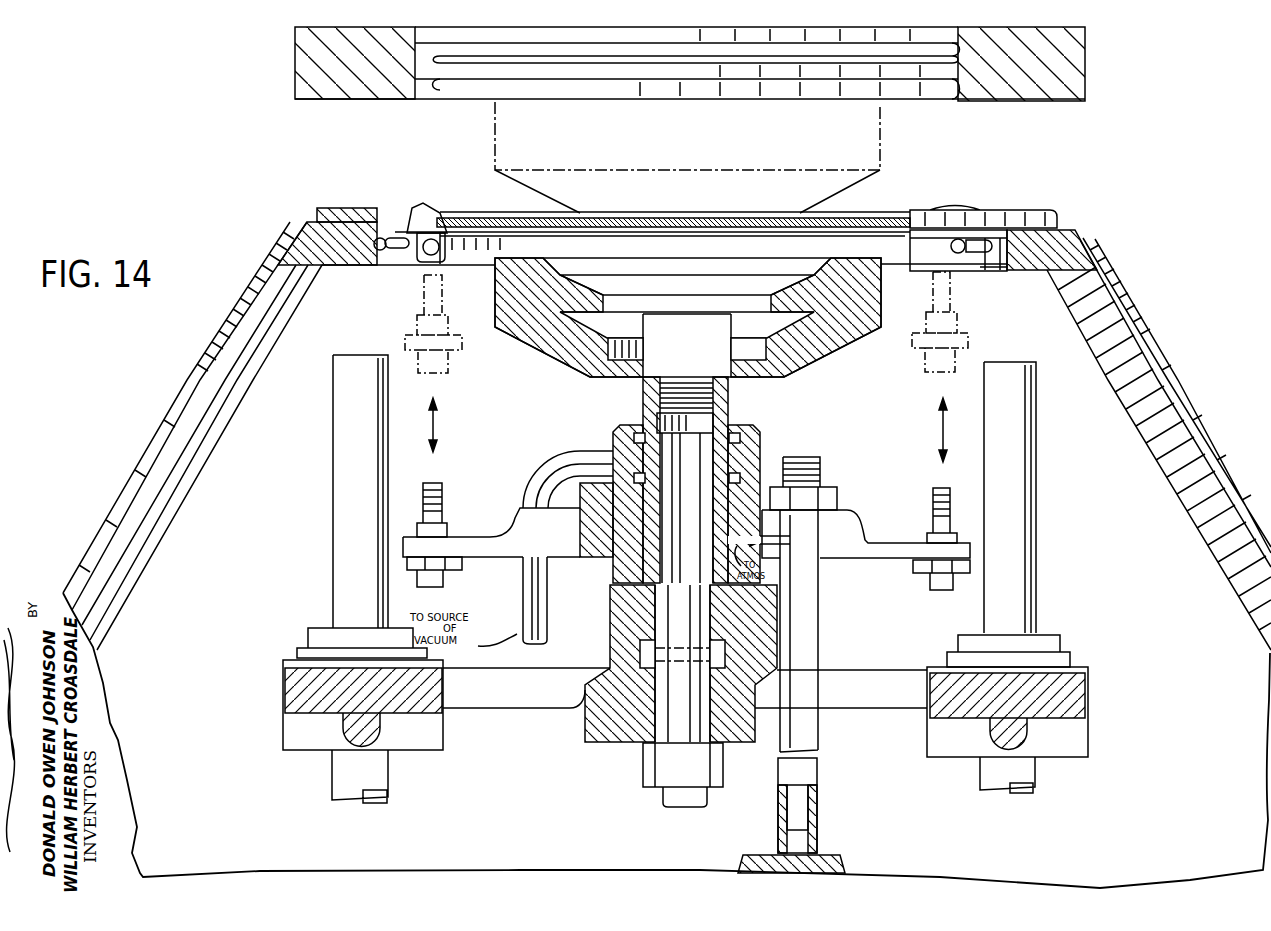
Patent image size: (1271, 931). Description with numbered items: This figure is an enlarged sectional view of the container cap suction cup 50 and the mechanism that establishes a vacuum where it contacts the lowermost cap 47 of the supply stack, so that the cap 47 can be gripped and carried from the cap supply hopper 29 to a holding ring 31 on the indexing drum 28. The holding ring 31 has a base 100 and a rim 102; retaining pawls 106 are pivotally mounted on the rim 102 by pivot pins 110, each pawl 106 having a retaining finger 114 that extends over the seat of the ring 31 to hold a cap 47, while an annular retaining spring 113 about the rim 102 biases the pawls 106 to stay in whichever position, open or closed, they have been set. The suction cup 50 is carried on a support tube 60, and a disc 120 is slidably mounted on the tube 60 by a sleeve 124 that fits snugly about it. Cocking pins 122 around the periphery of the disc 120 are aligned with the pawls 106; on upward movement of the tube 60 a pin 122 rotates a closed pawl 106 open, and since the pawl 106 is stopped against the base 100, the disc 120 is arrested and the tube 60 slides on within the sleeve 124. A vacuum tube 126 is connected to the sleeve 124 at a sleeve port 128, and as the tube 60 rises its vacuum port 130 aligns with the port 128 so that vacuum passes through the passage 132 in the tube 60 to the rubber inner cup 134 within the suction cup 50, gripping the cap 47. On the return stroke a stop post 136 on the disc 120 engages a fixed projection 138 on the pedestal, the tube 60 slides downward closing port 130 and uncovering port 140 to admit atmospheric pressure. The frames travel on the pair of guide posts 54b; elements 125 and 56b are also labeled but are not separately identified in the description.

The cap supply hopper 29 is at (1098, 96).
The cap 47 is at (477, 97).
The holding ring 31 is at (338, 210).
The pivot pin 110 is at (396, 238).
The retaining finger 114 is at (434, 218).
The rubber inner cup 134 is at (614, 256).
The base 100 is at (1062, 222).
The cocking pin 122 is at (447, 313).
The rim 102 is at (985, 262).
The annular retaining spring 113 is at (374, 265).
The retaining pawl 106 is at (415, 265).
The disc 120 is at (452, 340).
The drum 28 is at (200, 412).
The suction cup 50 is at (836, 354).
The support tube 60 is at (645, 406).
The sleeve port 128 is at (630, 440).
The seal 125 is at (737, 434).
The sleeve 124 is at (752, 430).
The passage 132 is at (700, 478).
The vacuum tube 126 is at (523, 505).
The port 140 is at (763, 524).
The vacuum port 130 is at (650, 512).
The stop post 136 is at (813, 647).
The guide posts 54b is at (338, 593).
The base block 56b is at (620, 728).
The fixed projection 138 is at (830, 861).